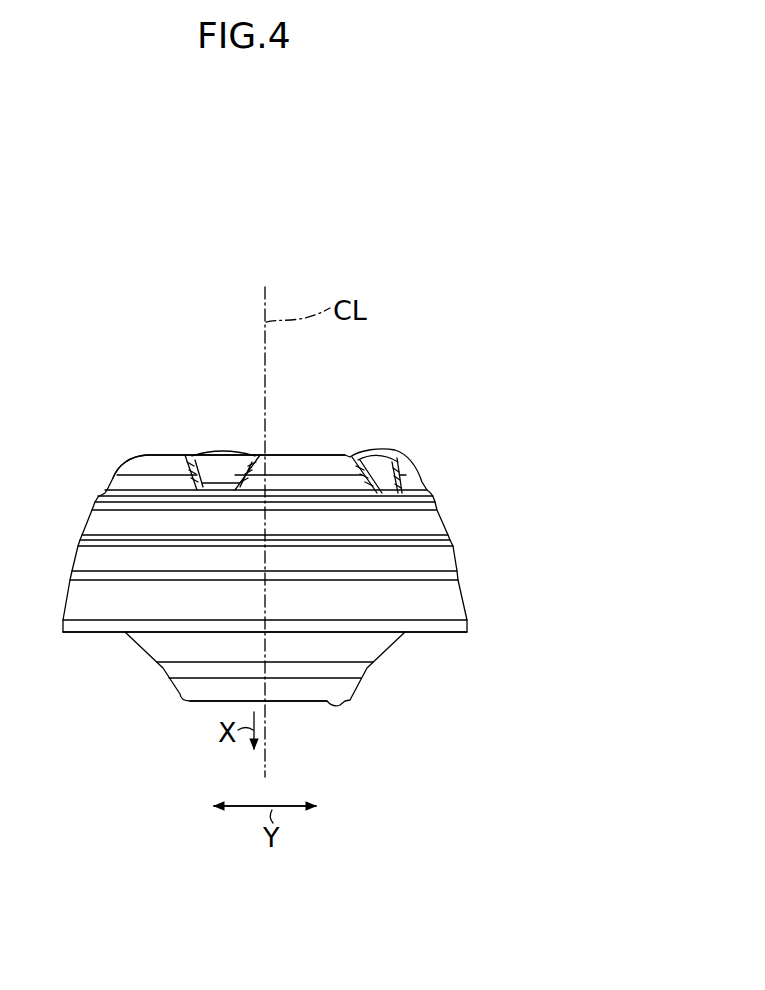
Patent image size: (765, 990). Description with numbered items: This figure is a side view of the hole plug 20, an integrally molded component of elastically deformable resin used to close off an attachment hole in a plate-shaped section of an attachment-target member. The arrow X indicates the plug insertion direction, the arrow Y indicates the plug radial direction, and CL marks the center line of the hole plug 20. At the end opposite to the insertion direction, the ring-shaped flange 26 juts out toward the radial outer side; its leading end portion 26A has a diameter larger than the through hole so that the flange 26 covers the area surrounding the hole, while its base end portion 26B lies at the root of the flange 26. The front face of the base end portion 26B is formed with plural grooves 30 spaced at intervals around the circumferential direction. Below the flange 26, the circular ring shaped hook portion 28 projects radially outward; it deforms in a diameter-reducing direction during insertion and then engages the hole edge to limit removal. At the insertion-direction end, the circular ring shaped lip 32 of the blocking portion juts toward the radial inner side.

The hole plug 20 is at (480, 408).
The flange 26 is at (468, 606).
The leading end portion of the flange 26A is at (450, 634).
The base end portion of the flange 26B is at (163, 453).
The hook portion 28 is at (390, 648).
The grooves 30 is at (228, 450).
The lip 32 is at (197, 705).